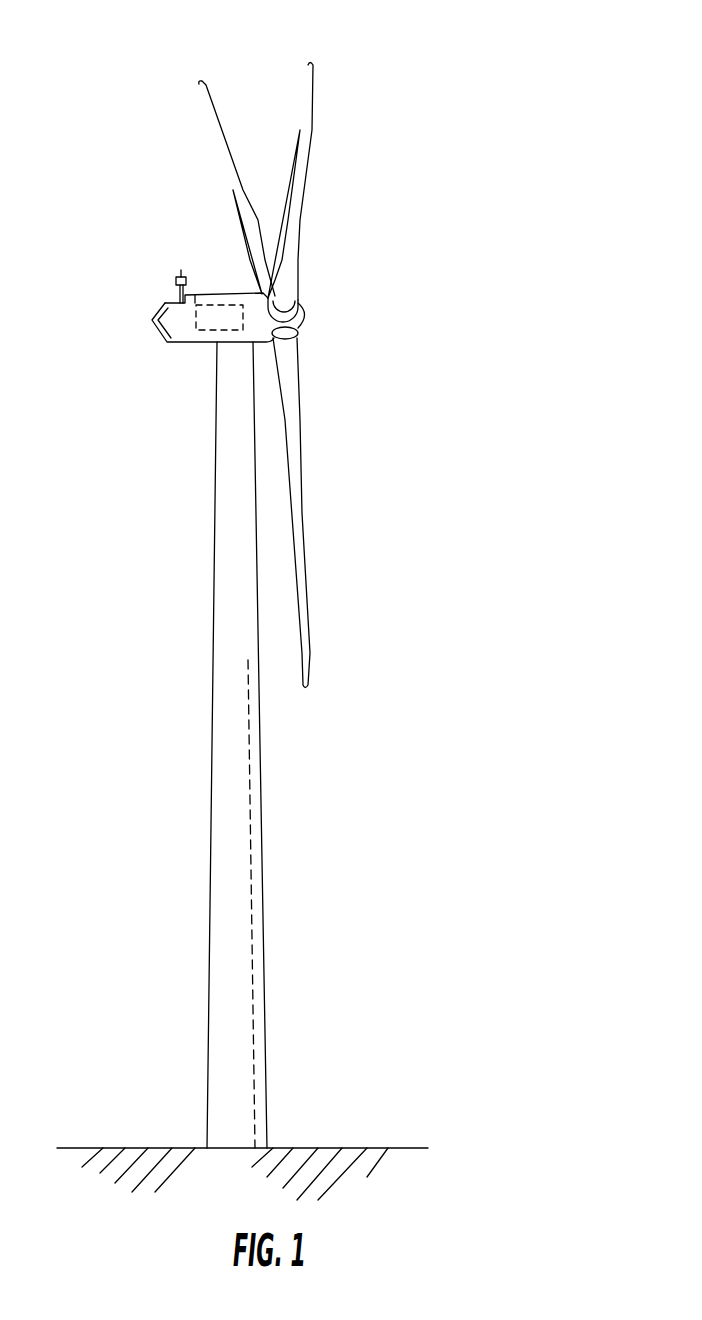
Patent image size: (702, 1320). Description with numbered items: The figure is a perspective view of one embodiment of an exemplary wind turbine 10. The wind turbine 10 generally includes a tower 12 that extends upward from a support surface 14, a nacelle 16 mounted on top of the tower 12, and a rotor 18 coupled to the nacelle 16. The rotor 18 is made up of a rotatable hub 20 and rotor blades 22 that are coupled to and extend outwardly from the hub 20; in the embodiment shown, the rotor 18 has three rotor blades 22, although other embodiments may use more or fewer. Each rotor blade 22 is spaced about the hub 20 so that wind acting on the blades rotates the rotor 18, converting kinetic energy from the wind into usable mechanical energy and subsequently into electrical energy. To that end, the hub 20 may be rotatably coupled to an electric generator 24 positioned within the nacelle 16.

The wind turbine 10 is at (465, 59).
The tower 12 is at (210, 876).
The support surface 14 is at (114, 1148).
The nacelle 16 is at (187, 342).
The rotor 18 is at (328, 274).
The rotatable hub 20 is at (307, 317).
The rotor blade 22 is at (302, 100).
The electric generator 24 is at (222, 292).